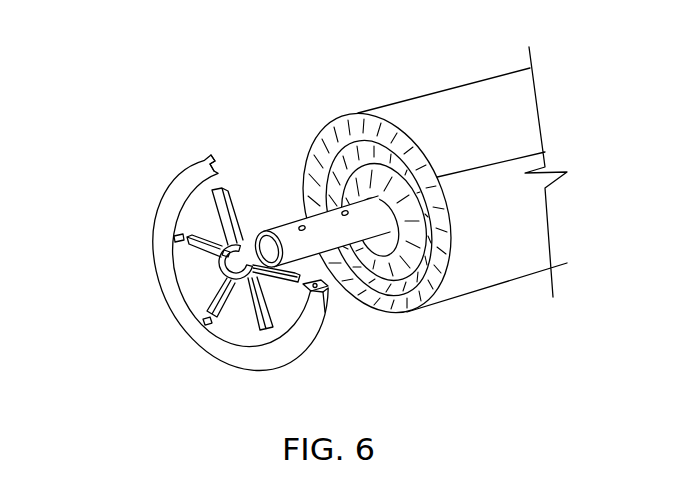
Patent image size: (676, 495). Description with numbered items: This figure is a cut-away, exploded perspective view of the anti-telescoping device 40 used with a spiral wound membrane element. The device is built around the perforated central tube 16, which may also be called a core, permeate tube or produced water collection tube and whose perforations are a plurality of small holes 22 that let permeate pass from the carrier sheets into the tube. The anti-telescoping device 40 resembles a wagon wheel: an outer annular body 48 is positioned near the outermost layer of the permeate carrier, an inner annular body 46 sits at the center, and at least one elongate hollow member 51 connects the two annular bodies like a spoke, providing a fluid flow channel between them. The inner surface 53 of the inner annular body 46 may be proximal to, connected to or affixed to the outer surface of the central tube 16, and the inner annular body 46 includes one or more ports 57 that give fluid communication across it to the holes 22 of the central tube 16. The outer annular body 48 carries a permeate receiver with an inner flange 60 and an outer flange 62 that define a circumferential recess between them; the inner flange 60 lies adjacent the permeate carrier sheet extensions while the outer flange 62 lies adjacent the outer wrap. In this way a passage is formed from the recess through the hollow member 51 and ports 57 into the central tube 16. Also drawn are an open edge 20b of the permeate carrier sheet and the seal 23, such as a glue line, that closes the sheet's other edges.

The central tube 16 is at (326, 263).
The open edge of permeate carrier sheet 20b is at (472, 167).
The holes 22 is at (309, 123).
The seal 23 is at (416, 300).
The anti-telescoping device 40 is at (219, 236).
The inner annular body 46 is at (205, 261).
The outer annular body 48 is at (173, 288).
The elongate hollow member 51 is at (232, 203).
The inner surface of inner annular body 53 is at (207, 291).
The port 57 is at (233, 253).
The inner flange 60 is at (325, 293).
The outer flange 62 is at (208, 156).